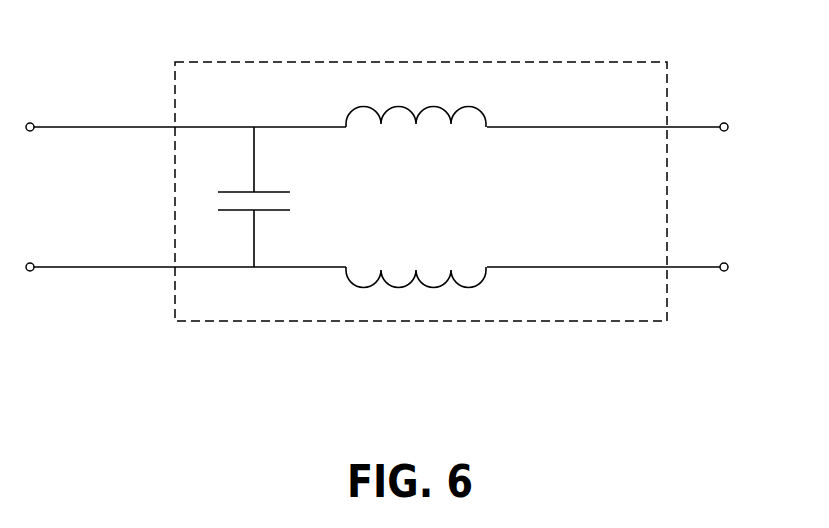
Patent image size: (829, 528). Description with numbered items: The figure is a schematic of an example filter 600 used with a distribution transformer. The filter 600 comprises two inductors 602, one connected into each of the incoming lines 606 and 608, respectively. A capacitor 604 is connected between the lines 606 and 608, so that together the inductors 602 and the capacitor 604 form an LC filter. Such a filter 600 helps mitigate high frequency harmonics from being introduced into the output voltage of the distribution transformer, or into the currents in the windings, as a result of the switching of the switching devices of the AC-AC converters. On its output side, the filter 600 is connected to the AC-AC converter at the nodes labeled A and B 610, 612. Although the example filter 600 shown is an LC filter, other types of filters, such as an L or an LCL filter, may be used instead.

The filter 600 is at (175, 62).
The inductors 602 is at (432, 110).
The capacitor 604 is at (270, 192).
The line 606 is at (105, 127).
The line 608 is at (105, 267).
The node A 610 is at (727, 122).
The node B 612 is at (727, 262).